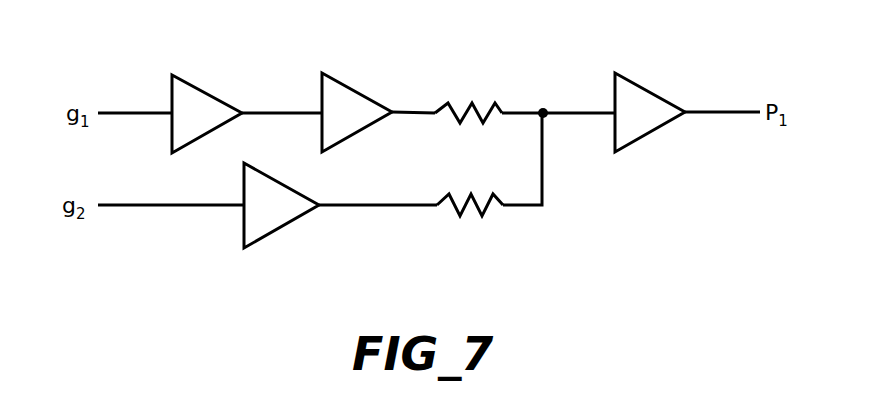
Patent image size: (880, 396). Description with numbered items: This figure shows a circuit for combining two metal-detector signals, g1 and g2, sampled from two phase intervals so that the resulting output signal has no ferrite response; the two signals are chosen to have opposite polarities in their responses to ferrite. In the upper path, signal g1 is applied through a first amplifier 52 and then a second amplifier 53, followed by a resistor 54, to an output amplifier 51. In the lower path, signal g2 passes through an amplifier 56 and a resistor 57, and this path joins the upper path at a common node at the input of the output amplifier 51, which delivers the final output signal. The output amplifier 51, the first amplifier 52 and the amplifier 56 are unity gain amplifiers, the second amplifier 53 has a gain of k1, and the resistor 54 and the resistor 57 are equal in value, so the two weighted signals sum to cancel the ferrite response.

The output amplifier 51 is at (647, 88).
The first amplifier 52 is at (207, 90).
The second amplifier 53 is at (362, 92).
The resistor 54 is at (457, 103).
The amplifier 56 is at (283, 223).
The resistor 57 is at (470, 210).